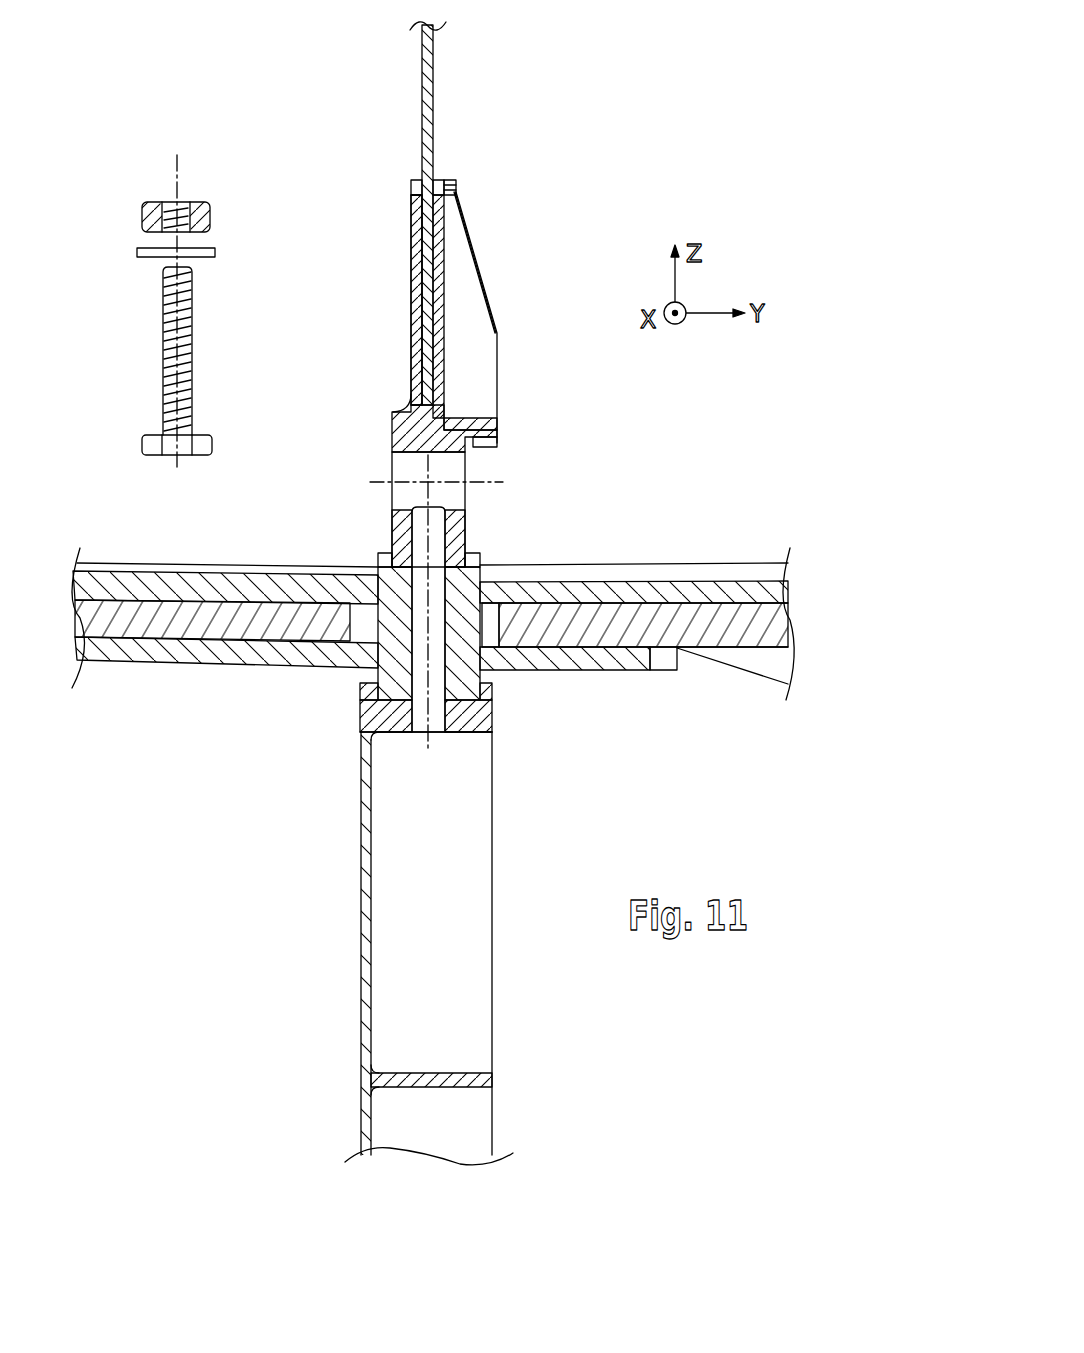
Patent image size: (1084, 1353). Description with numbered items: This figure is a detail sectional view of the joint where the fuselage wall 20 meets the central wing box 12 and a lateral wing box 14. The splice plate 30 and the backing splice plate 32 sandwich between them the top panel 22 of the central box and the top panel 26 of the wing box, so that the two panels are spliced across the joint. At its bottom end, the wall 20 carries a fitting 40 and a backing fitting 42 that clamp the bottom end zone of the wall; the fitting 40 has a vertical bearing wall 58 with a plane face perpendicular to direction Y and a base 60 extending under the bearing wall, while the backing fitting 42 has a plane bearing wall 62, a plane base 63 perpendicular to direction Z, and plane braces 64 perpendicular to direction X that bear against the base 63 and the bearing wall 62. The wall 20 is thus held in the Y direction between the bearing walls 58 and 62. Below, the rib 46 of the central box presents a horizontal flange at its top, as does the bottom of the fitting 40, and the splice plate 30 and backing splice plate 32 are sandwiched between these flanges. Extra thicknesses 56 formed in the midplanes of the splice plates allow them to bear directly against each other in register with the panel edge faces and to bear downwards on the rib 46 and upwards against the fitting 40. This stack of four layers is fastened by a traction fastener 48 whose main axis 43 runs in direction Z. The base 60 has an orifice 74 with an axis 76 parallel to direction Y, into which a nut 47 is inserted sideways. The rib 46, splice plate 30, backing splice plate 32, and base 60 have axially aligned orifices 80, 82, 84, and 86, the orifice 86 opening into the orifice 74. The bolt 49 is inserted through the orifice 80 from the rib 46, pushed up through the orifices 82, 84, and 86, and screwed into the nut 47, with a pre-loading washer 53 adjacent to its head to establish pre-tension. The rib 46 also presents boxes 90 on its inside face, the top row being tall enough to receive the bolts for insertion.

The central wing box 12 is at (607, 808).
The lateral wing box 14 is at (239, 830).
The wall 20 is at (425, 93).
The top panel of the central box 22 is at (745, 624).
The top panel of the wing box 26 is at (160, 620).
The splice plate 30 is at (243, 652).
The backing splice plate 32 is at (673, 592).
The fitting 40 is at (412, 350).
The backing fitting 42 is at (465, 366).
The main axis 43 is at (185, 170).
The side wall or rib 46 is at (448, 864).
The nut 47 is at (210, 208).
The fastener member (traction fastener) 48 is at (212, 352).
The bolt 49 is at (165, 350).
The pre-loading washer 53 is at (148, 248).
The extra thicknesses 56 is at (385, 562).
The bearing wall 58 is at (415, 262).
The base 60 is at (408, 440).
The bearing wall 62 is at (442, 283).
The base 63 is at (477, 416).
The braces 64 is at (475, 318).
The orifice 74 is at (398, 497).
The axis 76 is at (437, 482).
The orifice 80 is at (440, 734).
The orifice 82 is at (440, 684).
The orifice 84 is at (503, 630).
The orifice 86 is at (440, 550).
The boxes 90 is at (470, 964).